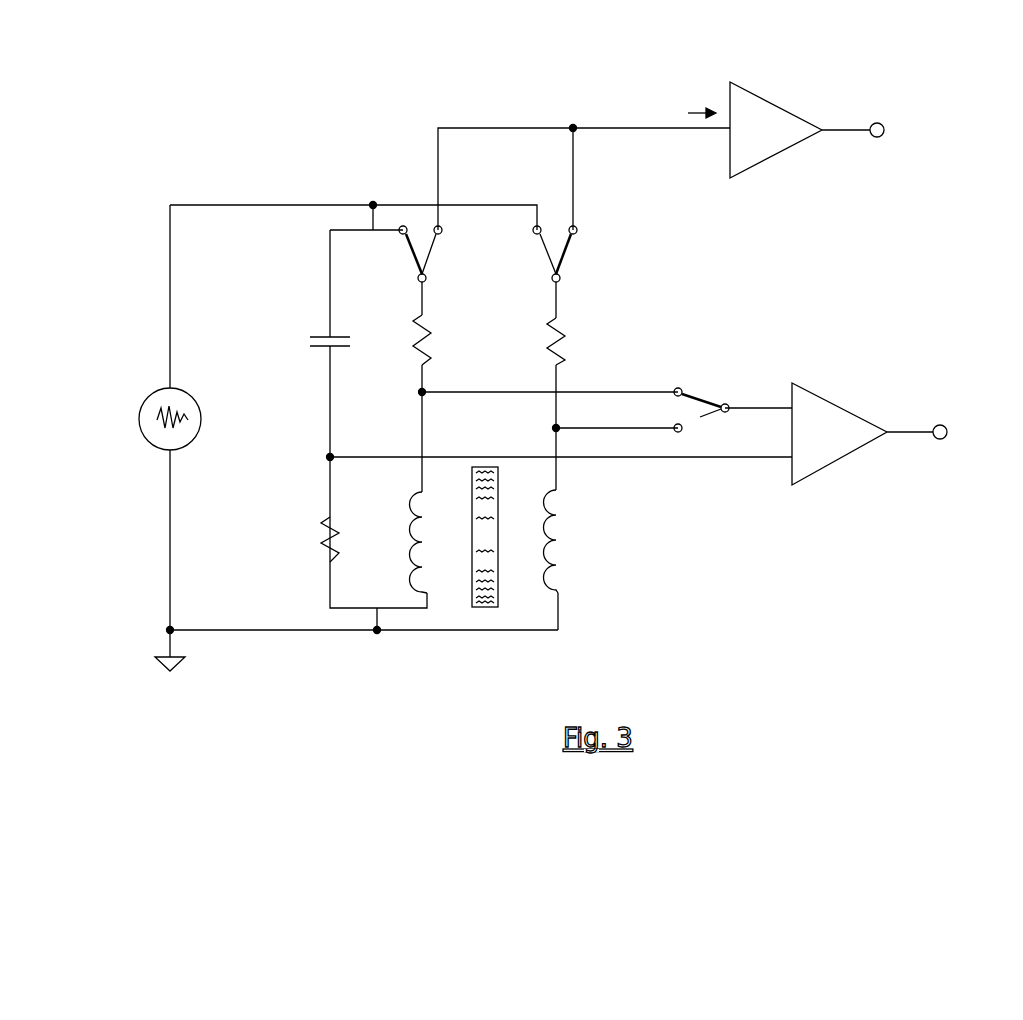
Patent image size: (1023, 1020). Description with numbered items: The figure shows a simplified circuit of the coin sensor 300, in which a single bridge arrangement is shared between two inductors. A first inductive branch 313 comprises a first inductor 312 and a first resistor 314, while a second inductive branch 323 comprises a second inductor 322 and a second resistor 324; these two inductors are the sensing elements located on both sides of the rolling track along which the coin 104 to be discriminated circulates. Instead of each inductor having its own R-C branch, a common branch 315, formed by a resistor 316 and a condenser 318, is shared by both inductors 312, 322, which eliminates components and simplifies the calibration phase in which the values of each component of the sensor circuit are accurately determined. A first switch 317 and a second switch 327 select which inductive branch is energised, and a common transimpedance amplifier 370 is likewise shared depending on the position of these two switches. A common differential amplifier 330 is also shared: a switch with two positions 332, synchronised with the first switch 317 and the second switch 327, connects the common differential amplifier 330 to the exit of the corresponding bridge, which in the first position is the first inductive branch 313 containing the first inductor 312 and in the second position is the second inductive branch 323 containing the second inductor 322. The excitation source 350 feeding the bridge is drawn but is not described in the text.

The coin sensor 300 is at (214, 107).
The excitation signal source 350 is at (165, 438).
The condenser 318 is at (320, 335).
The common branch 315 is at (328, 410).
The resistor 316 is at (326, 520).
The first switch 317 is at (410, 250).
The second switch 327 is at (568, 250).
The first resistor 314 is at (417, 350).
The second resistor 324 is at (566, 352).
The first inductive branch 313 is at (420, 428).
The second inductive branch 323 is at (557, 477).
The first inductor 312 is at (410, 557).
The second inductor 322 is at (551, 548).
The coin 104 is at (488, 607).
The switch with two positions 332 is at (702, 400).
The common transimpedance amplifier 370 is at (773, 125).
The common differential amplifier 330 is at (840, 435).